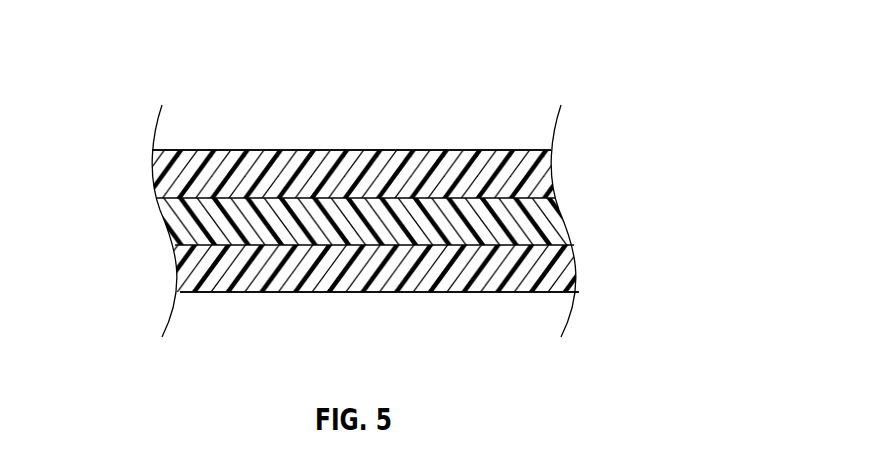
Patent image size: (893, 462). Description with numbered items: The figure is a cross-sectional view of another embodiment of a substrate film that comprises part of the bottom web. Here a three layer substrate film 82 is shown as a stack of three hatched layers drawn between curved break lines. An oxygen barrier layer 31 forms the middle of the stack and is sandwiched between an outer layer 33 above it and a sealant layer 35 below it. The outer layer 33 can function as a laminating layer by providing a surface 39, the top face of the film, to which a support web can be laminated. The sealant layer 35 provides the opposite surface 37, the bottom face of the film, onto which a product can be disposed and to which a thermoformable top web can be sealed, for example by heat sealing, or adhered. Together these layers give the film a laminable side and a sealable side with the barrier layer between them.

The three layer substrate film 82 is at (397, 211).
The outer layer 33 is at (164, 169).
The oxygen barrier layer 31 is at (174, 219).
The sealant layer 35 is at (189, 269).
The surface 39 is at (357, 150).
The surface 37 is at (360, 292).